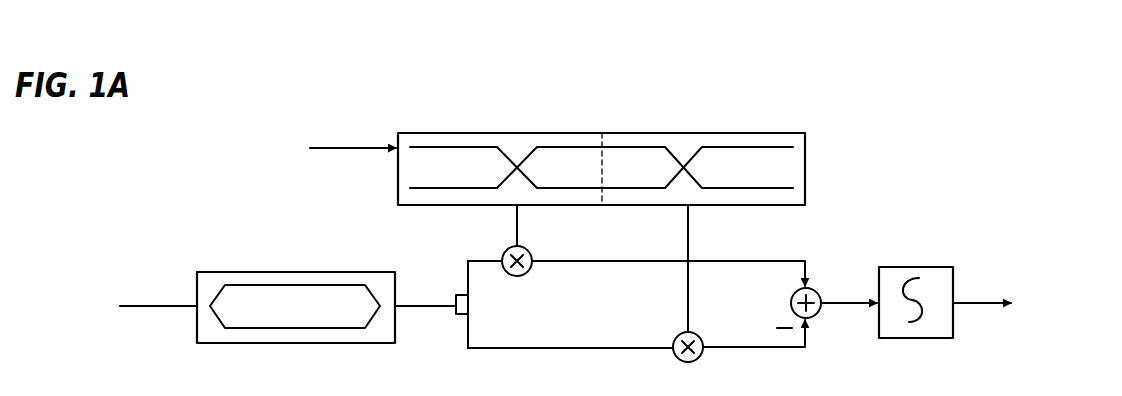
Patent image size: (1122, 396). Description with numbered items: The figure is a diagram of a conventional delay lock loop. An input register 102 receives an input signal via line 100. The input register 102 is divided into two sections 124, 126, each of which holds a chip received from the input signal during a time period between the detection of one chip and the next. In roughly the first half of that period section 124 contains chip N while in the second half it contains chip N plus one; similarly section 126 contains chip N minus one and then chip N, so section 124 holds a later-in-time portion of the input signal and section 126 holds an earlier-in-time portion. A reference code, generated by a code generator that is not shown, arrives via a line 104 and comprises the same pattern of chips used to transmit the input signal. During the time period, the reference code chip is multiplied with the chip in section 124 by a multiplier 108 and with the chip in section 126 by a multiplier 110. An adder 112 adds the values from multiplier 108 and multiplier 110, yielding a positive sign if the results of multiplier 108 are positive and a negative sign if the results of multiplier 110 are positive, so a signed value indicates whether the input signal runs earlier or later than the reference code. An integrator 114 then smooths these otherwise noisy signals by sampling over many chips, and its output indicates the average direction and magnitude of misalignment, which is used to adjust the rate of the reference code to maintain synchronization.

The line 100 is at (340, 148).
The input register 102 is at (810, 168).
The line 104 is at (281, 272).
The multiplier 108 is at (521, 275).
The multiplier 110 is at (694, 361).
The adder 112 is at (815, 292).
The integrator 114 is at (915, 267).
The section 124 is at (410, 207).
The section 126 is at (797, 206).